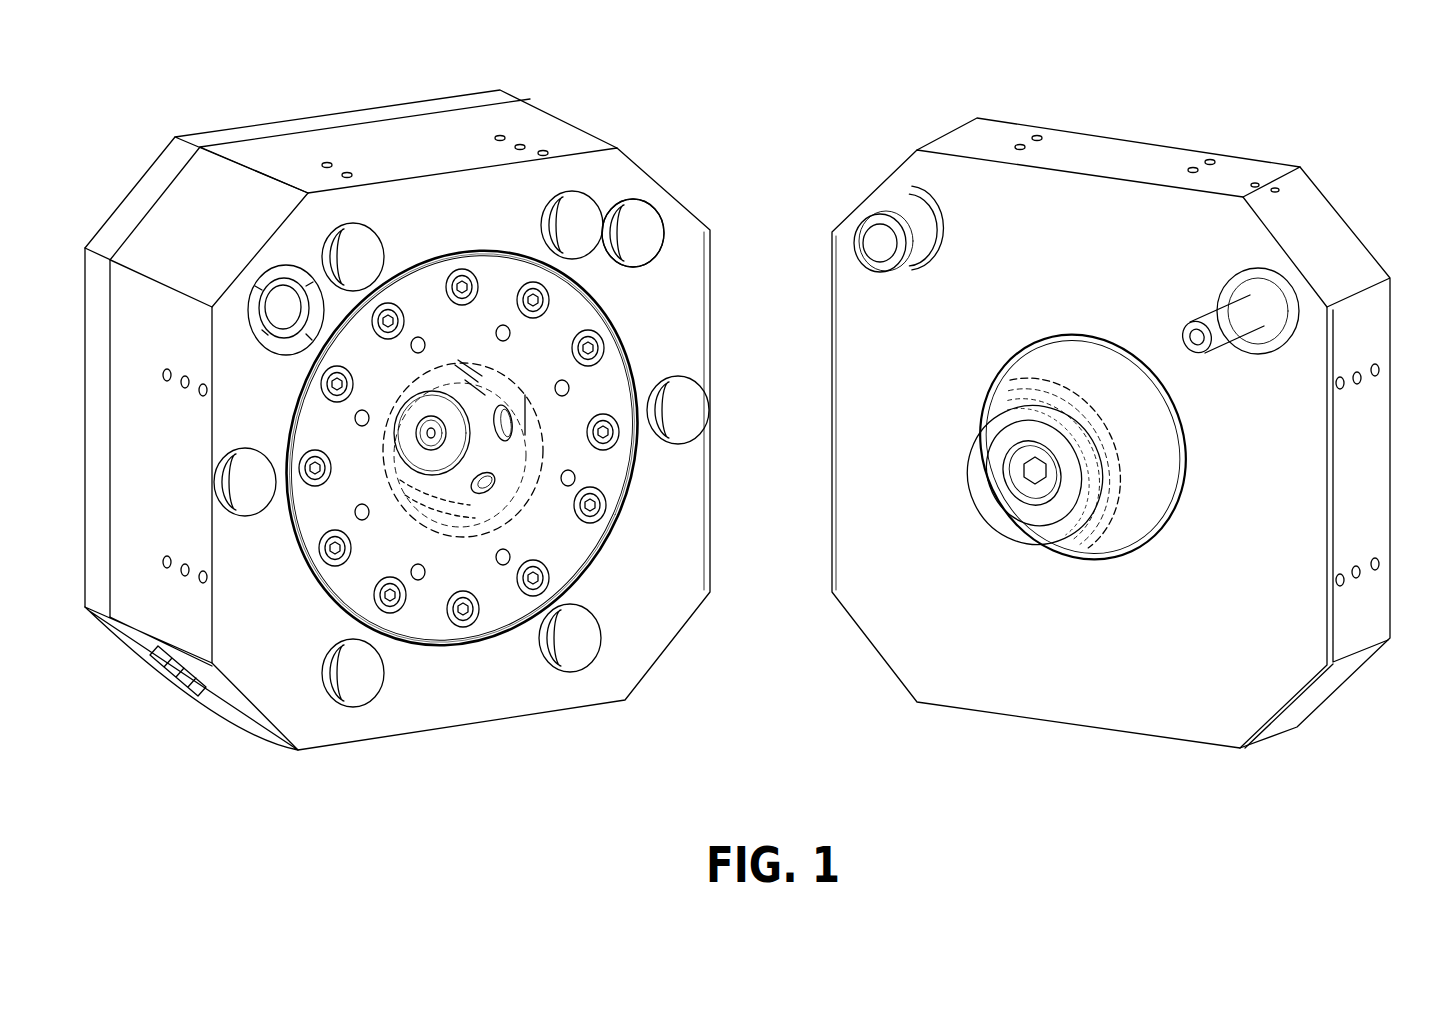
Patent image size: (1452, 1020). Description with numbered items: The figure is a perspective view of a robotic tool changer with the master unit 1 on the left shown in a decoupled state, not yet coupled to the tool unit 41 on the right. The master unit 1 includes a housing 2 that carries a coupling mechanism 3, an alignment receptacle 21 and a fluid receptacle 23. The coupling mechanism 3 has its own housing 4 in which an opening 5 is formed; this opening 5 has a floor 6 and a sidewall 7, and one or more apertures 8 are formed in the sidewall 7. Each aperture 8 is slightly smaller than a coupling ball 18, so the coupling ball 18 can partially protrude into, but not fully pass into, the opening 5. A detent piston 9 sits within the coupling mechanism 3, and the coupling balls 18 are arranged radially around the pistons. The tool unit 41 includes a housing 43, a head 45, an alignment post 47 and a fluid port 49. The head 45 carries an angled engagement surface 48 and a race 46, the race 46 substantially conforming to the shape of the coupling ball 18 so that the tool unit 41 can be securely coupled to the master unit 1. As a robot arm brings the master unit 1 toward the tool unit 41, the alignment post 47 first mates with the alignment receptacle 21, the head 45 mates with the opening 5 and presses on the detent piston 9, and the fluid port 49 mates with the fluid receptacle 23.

The master unit 1 is at (274, 80).
The housing 2 is at (562, 137).
The coupling mechanism 3 is at (452, 238).
The housing 4 is at (563, 545).
The opening 5 is at (478, 368).
The floor 6 is at (410, 485).
The sidewall 7 is at (508, 458).
The aperture 8 is at (500, 481).
The detent piston 9 is at (415, 410).
The coupling ball 18 is at (505, 423).
The alignment receptacle 21 is at (278, 307).
The fluid receptacle 23 is at (625, 230).
The tool unit 41 is at (1222, 86).
The housing 43 is at (1278, 515).
The head 45 is at (995, 520).
The race 46 is at (1145, 433).
The alignment post 47 is at (1232, 316).
The angled engagement surface 48 is at (1045, 395).
The fluid port 49 is at (882, 243).